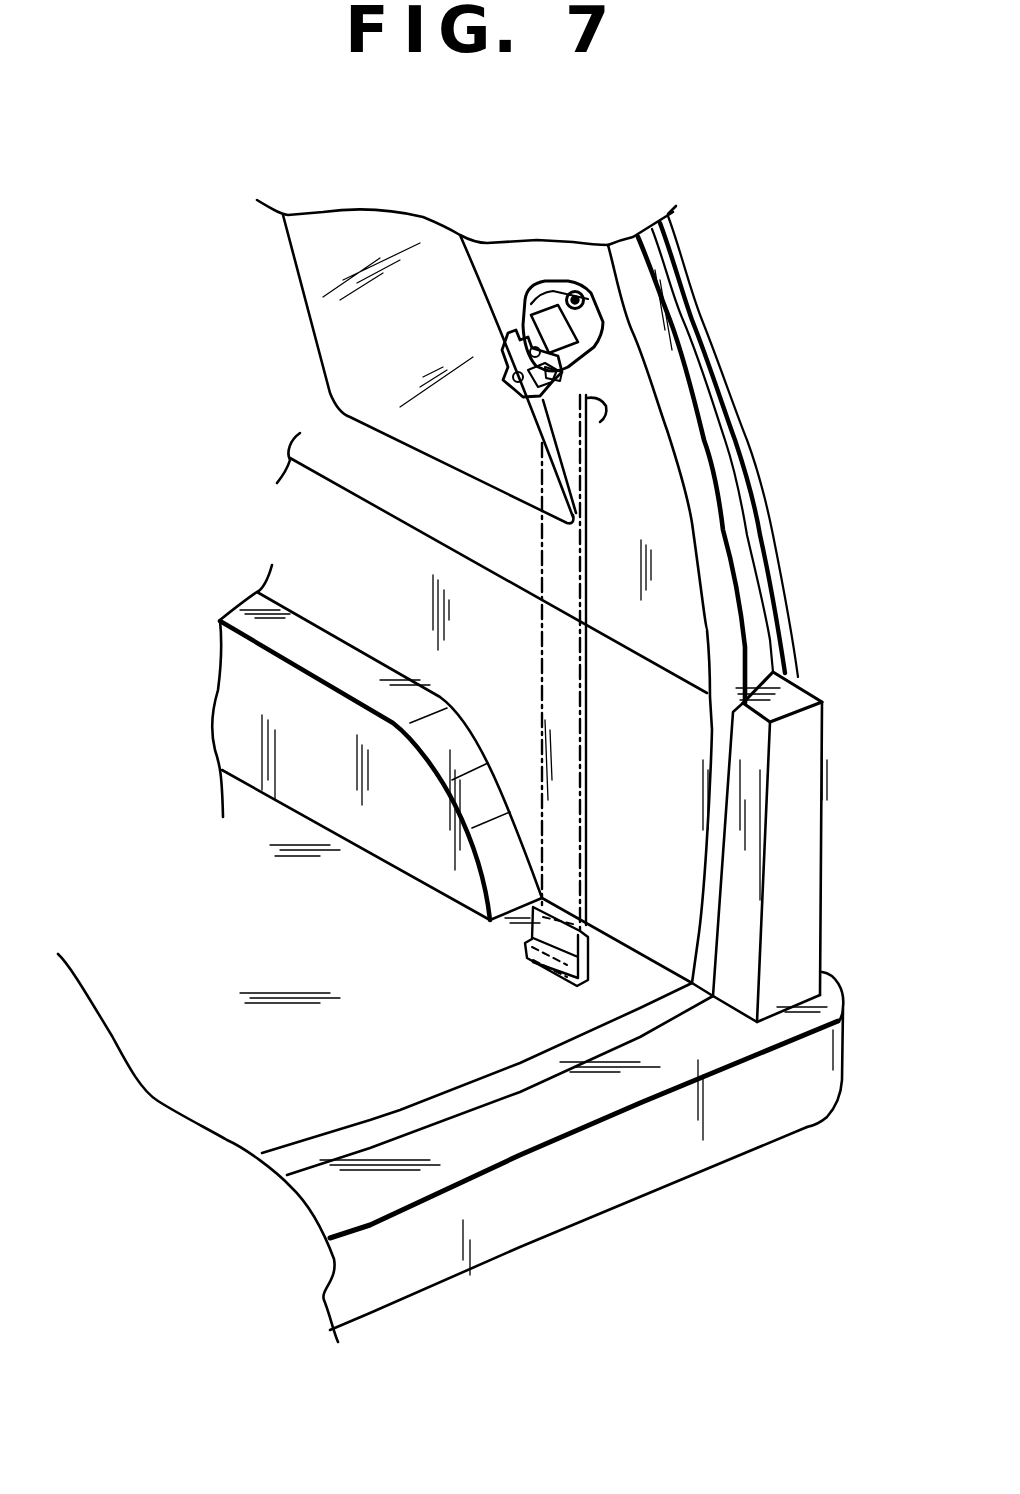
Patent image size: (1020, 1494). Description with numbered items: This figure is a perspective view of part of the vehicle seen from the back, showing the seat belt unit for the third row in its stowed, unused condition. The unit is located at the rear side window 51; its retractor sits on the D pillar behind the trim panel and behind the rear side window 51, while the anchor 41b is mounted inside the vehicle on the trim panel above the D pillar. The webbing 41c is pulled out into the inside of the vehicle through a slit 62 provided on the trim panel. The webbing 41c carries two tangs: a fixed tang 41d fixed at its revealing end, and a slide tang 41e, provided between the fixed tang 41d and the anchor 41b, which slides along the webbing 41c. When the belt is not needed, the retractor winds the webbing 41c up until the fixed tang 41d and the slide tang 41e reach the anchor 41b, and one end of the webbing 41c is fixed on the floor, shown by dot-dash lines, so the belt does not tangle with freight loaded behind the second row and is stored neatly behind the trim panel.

The rear side window 51 is at (486, 260).
The anchor 41b is at (555, 280).
The slide tang 41e is at (512, 326).
The fixed tang 41d is at (514, 372).
The webbing 41c is at (583, 732).
The slit 62 is at (595, 408).